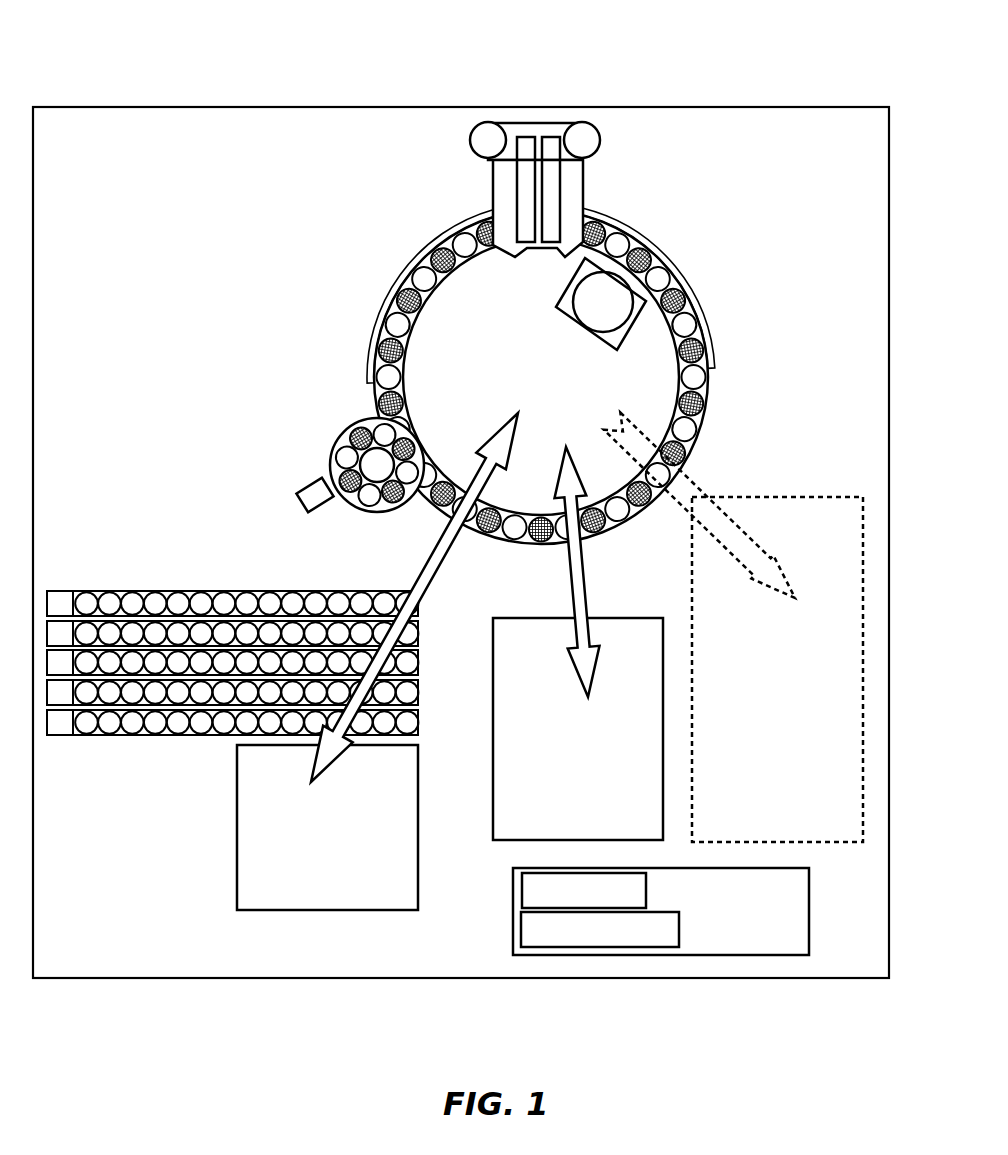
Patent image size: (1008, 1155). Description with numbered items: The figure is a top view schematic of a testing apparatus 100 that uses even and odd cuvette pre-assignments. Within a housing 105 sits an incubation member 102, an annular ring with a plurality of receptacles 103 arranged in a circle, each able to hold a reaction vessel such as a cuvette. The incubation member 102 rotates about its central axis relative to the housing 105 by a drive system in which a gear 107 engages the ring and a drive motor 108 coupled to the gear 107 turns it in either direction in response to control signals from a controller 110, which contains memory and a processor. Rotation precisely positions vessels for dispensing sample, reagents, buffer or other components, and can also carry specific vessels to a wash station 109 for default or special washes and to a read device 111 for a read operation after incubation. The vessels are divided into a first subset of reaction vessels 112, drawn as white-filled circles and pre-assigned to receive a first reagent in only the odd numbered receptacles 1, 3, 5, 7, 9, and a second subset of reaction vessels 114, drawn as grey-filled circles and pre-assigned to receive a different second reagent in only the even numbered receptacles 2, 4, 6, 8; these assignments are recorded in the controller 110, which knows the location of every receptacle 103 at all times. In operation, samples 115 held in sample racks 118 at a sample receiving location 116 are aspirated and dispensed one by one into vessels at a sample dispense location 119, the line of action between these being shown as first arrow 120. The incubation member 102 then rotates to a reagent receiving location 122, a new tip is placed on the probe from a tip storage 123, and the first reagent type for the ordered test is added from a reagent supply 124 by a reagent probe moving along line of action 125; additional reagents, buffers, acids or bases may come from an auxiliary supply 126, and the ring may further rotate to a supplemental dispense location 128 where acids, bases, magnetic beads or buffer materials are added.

The testing apparatus 100 is at (236, 78).
The housing 105 is at (737, 107).
The incubation member 102 is at (718, 382).
The receptacles 103 is at (372, 353).
The gear 107 is at (580, 340).
The drive motor 108 is at (563, 281).
The wash station 109 is at (493, 183).
The controller 110 is at (810, 905).
The read device 111 is at (323, 436).
The first subset of reaction vessels 112 is at (698, 292).
The second subset of reaction vessels 114 is at (406, 272).
The samples 115 is at (246, 604).
The sample receiving location 116 is at (114, 538).
The sample racks 118 is at (115, 735).
The sample dispense location 119 is at (466, 482).
The first arrow 120 is at (424, 568).
The reagent receiving location 122 is at (560, 549).
The tip storage 123 is at (327, 827).
The reagent supply 124 is at (578, 729).
The line of action 125 is at (586, 593).
The auxiliary supply 126 is at (777, 669).
The supplemental dispense location 128 is at (658, 438).
The odd numbered receptacle 1 is at (440, 510).
The even numbered receptacle 2 is at (488, 533).
The odd numbered receptacle 3 is at (517, 520).
The even numbered receptacle 4 is at (540, 540).
The odd numbered receptacle 5 is at (590, 538).
The even numbered receptacle 6 is at (586, 502).
The odd numbered receptacle 7 is at (633, 528).
The even numbered receptacle 8 is at (660, 506).
The odd numbered receptacle 9 is at (682, 468).